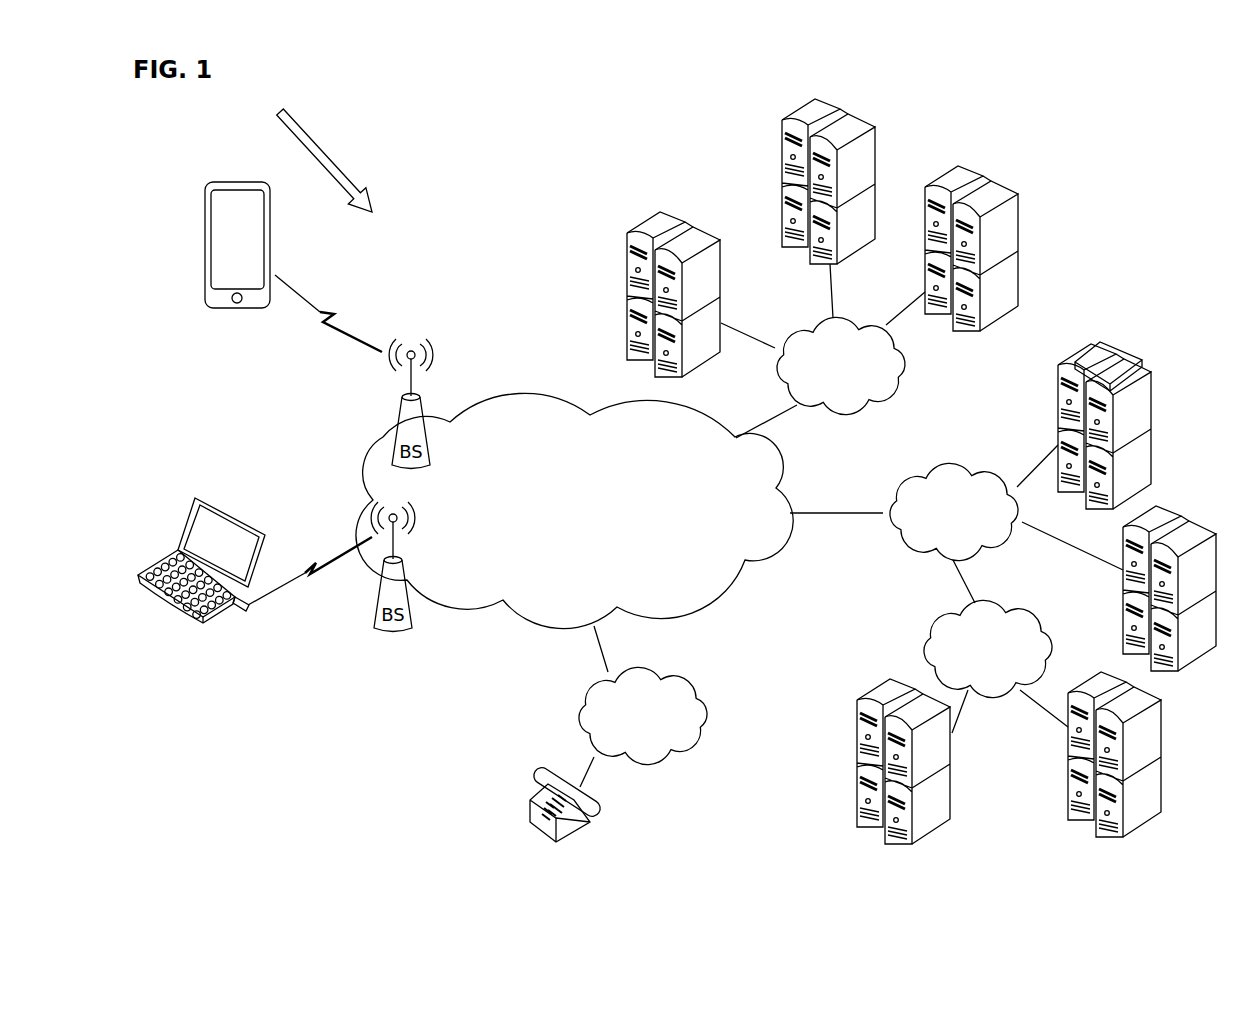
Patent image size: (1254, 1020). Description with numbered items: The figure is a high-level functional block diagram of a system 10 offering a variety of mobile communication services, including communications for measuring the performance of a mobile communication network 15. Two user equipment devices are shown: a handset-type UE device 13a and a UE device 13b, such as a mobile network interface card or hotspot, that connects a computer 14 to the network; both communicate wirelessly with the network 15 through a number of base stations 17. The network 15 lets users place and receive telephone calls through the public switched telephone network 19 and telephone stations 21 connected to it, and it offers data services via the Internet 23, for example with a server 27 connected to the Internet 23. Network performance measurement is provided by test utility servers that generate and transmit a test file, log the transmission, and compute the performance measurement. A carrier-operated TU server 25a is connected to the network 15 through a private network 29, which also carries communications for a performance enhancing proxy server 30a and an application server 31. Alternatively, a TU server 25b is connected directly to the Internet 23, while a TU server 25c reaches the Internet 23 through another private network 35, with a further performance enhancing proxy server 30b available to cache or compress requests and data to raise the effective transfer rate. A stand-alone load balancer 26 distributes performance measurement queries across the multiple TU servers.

The system 10 is at (316, 151).
The user equipment device 13a is at (205, 224).
The user equipment device 13b is at (245, 611).
The computer 14 is at (188, 514).
The mobile communication network 15 is at (535, 395).
The base station 17 is at (395, 415).
The public switched telephone network 19 is at (573, 728).
The telephone station 21 is at (525, 823).
The Internet 23 is at (892, 486).
The test utility server 25a is at (627, 273).
The test utility server 25b is at (1152, 401).
The test utility server 25c is at (1163, 722).
The load balancer 26 is at (1135, 356).
The server 27 is at (1175, 512).
The private network 29 is at (866, 411).
The performance enhancing proxy server 30a is at (782, 141).
The performance enhancing proxy server 30b is at (857, 745).
The application server 31 is at (1019, 252).
The private network 35 is at (918, 625).